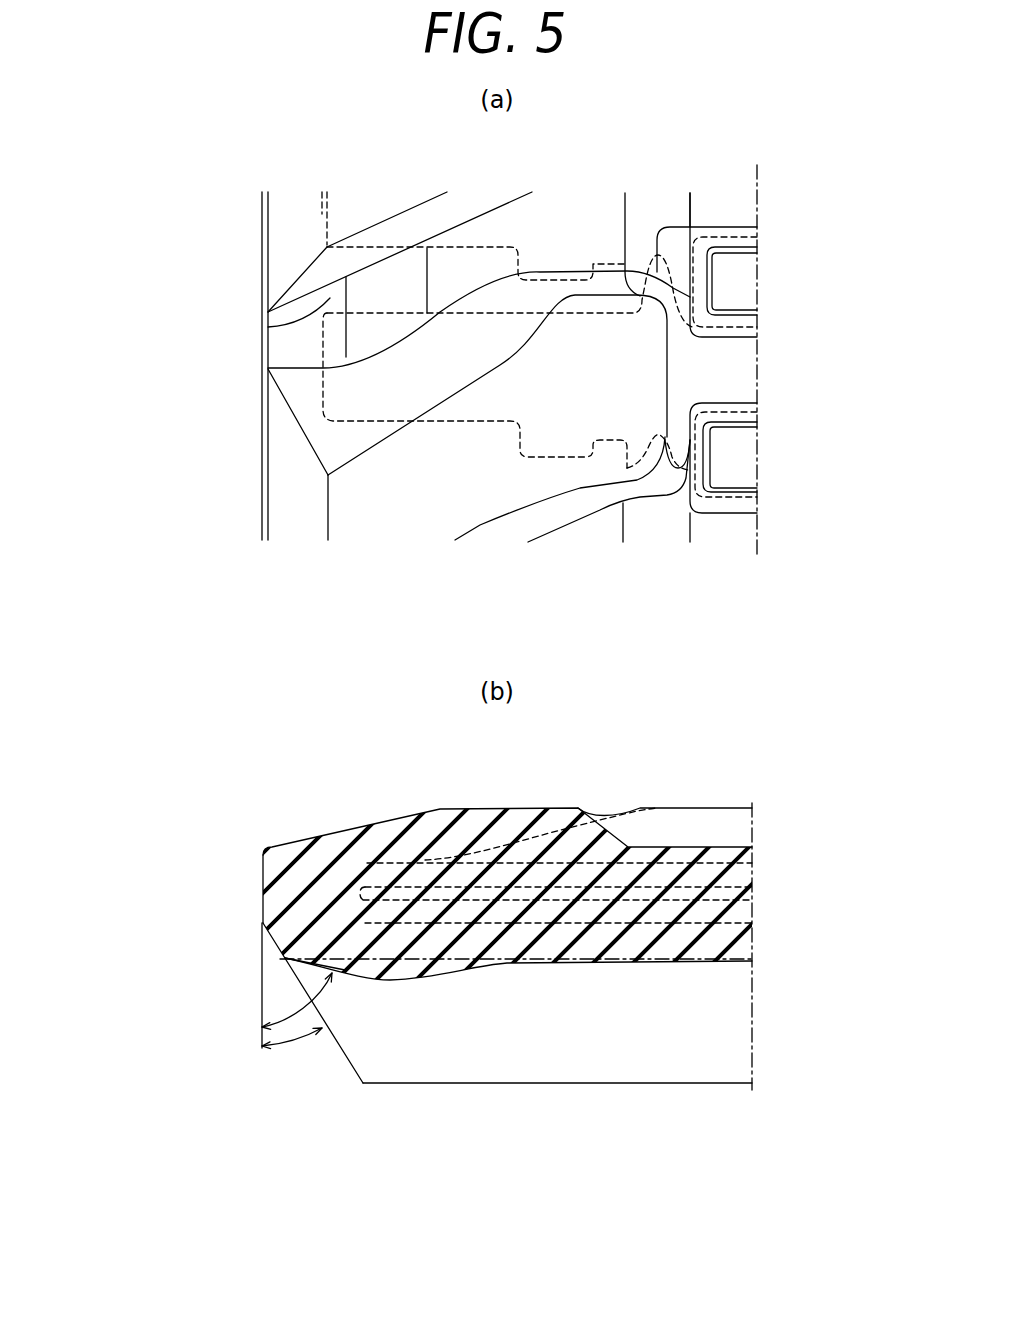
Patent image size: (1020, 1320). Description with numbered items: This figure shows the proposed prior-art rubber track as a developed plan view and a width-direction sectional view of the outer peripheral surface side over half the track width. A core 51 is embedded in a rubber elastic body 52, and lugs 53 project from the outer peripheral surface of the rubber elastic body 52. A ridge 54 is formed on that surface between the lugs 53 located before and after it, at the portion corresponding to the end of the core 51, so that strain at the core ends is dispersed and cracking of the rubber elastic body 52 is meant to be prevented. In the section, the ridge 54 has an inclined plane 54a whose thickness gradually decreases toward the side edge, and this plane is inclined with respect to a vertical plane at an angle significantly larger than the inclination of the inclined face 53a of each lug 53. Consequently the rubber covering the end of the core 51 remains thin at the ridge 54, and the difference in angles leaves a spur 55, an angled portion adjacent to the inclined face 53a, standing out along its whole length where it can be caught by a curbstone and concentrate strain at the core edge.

The core 51 is at (322, 214).
The rubber elastic body 52 is at (280, 412).
The lug 53 is at (346, 212).
The inclined face 53a is at (343, 1055).
The ridge 54 is at (268, 327).
The inclined plane 54a is at (320, 968).
The spur 55 is at (312, 265).